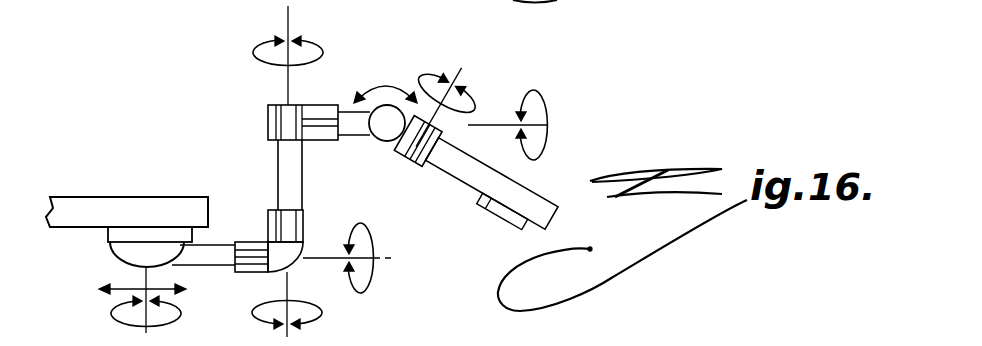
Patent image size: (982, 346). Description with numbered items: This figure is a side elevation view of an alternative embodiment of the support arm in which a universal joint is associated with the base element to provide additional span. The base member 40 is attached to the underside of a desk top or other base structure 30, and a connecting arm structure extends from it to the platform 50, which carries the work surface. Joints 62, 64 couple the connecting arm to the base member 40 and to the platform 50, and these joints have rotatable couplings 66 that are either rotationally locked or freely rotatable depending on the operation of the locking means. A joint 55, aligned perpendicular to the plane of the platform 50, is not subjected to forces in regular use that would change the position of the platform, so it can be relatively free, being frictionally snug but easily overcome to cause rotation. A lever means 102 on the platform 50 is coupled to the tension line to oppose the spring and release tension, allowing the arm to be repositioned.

The base structure 30 is at (167, 208).
The base member 40 is at (127, 255).
The joint 62 is at (288, 258).
The joint 64 is at (302, 142).
The rotatable couplings 66 is at (310, 110).
The joint 55 is at (435, 113).
The platform 50 is at (492, 184).
The lever means 102 is at (502, 211).